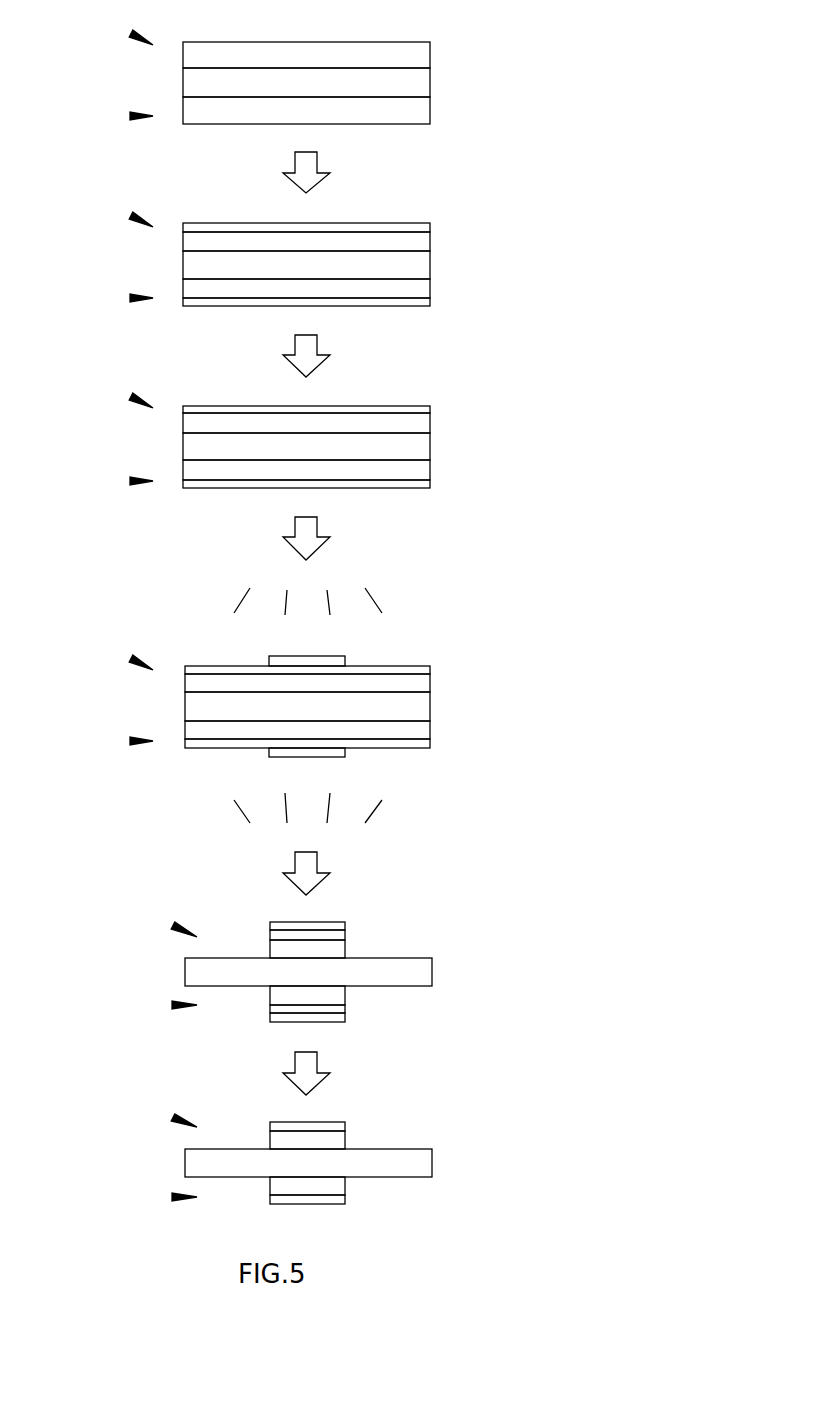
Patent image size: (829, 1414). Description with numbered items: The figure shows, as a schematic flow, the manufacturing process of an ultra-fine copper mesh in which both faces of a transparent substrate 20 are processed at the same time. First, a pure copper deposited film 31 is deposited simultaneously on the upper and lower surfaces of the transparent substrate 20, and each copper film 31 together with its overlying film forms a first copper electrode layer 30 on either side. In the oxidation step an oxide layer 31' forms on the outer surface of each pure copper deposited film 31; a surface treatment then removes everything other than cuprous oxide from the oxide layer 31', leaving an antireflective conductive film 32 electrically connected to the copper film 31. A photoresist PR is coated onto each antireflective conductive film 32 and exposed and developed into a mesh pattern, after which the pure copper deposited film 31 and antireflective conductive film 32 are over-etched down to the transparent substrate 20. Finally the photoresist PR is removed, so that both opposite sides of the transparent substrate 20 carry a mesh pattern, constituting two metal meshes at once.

The transparent substrate 20 is at (430, 82).
The first copper electrode layer 30 is at (130, 33).
The first pure copper deposited film 31 is at (337, 615).
The oxide layer 31' is at (340, 262).
The first antireflective conductive film 32 is at (427, 409).
The photoresist PR is at (332, 662).